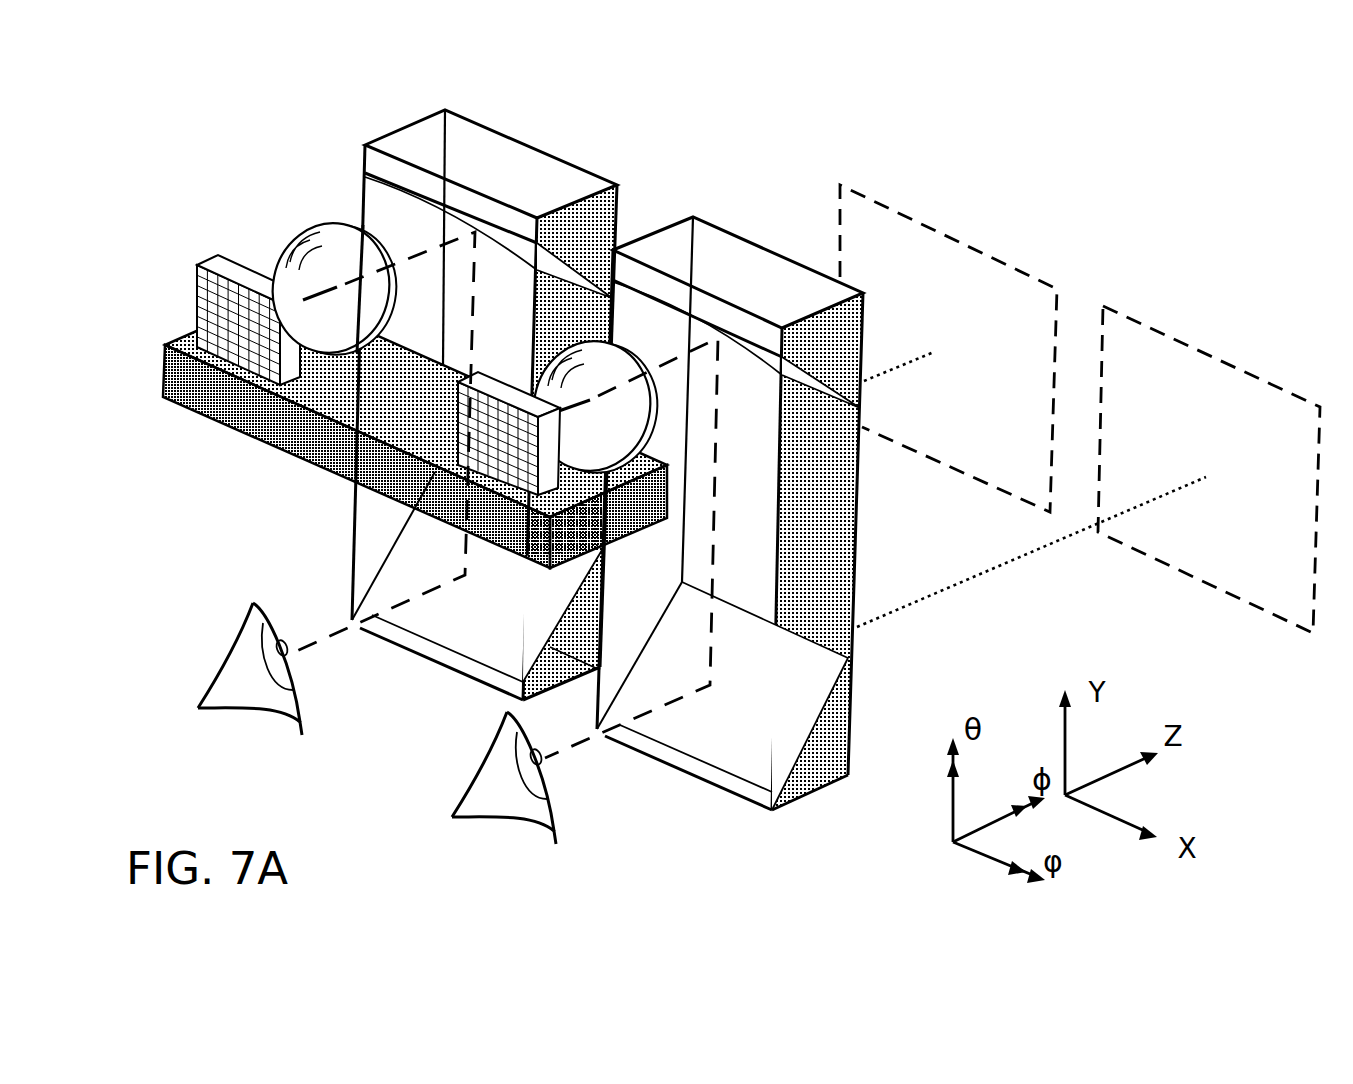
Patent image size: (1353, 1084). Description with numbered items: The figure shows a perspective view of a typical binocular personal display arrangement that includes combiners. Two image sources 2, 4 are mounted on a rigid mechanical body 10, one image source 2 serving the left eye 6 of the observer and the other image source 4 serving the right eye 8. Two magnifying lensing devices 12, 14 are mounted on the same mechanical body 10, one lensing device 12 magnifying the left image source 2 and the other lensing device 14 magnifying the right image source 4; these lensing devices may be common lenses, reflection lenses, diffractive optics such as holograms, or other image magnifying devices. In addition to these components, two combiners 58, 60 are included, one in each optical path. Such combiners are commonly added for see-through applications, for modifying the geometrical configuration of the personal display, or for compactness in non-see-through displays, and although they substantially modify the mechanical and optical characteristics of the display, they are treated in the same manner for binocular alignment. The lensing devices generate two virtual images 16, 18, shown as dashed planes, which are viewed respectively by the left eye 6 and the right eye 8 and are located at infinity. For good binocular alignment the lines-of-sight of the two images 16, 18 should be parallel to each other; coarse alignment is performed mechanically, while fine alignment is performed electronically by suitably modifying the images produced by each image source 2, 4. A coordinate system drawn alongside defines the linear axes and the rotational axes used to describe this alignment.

The image source 2 is at (232, 275).
The image source 4 is at (452, 430).
The left eye 6 is at (267, 712).
The right eye 8 is at (490, 777).
The rigid mechanical body 10 is at (188, 327).
The lensing device 12 is at (303, 230).
The lensing device 14 is at (533, 347).
The virtual image 16 is at (921, 225).
The virtual image 18 is at (1173, 348).
The combiner 58 is at (583, 187).
The combiner 60 is at (725, 240).